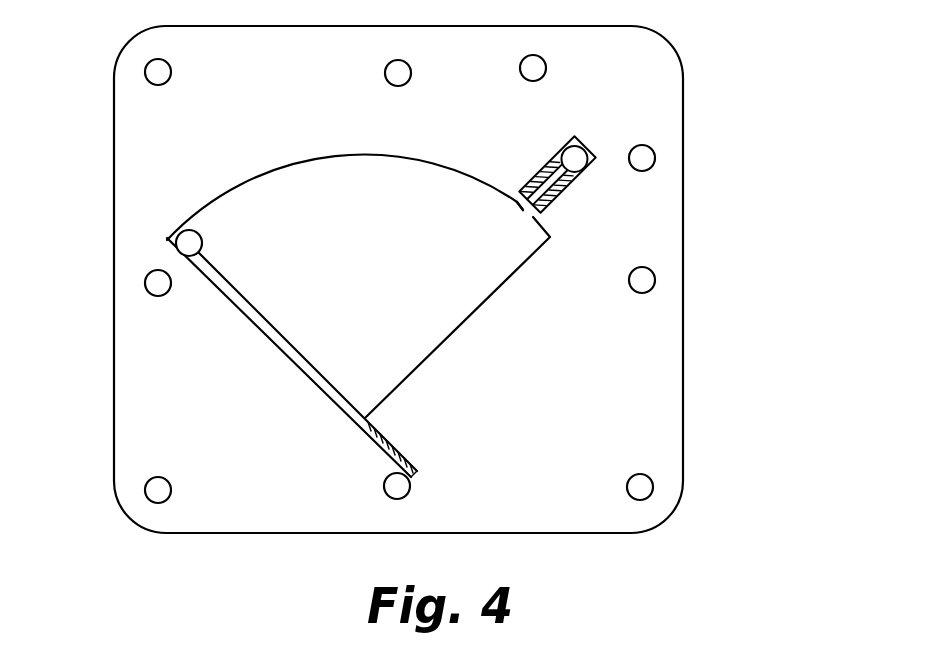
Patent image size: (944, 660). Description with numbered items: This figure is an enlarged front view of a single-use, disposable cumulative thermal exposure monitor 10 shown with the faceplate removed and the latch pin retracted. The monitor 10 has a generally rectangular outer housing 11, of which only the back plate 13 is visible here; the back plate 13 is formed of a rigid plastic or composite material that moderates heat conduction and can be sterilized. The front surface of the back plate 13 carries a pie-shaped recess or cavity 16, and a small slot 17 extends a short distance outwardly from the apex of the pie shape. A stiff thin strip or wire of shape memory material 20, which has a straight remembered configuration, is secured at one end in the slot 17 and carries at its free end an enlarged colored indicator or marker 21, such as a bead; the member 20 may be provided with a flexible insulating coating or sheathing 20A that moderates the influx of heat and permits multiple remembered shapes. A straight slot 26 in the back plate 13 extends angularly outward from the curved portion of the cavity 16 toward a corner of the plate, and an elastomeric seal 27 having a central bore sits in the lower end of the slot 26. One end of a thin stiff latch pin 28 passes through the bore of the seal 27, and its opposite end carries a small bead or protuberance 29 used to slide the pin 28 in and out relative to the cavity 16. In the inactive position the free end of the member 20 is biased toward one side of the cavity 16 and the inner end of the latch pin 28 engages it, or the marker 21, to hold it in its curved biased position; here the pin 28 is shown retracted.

The cumulative thermal exposure monitor 10 is at (718, 200).
The outer housing 11 is at (115, 294).
The back plate 13 is at (128, 360).
The pie-shaped recess or cavity 16 is at (340, 157).
The small slot 17 is at (394, 438).
The shape memory strip or wire 20 is at (314, 357).
The flexible coating or sheathing 20A is at (314, 357).
The indicator or marker 21 is at (205, 241).
The straight slot 26 is at (554, 198).
The seal 27 is at (541, 173).
The latch pin 28 is at (522, 214).
The bead or protuberance 29 is at (577, 158).